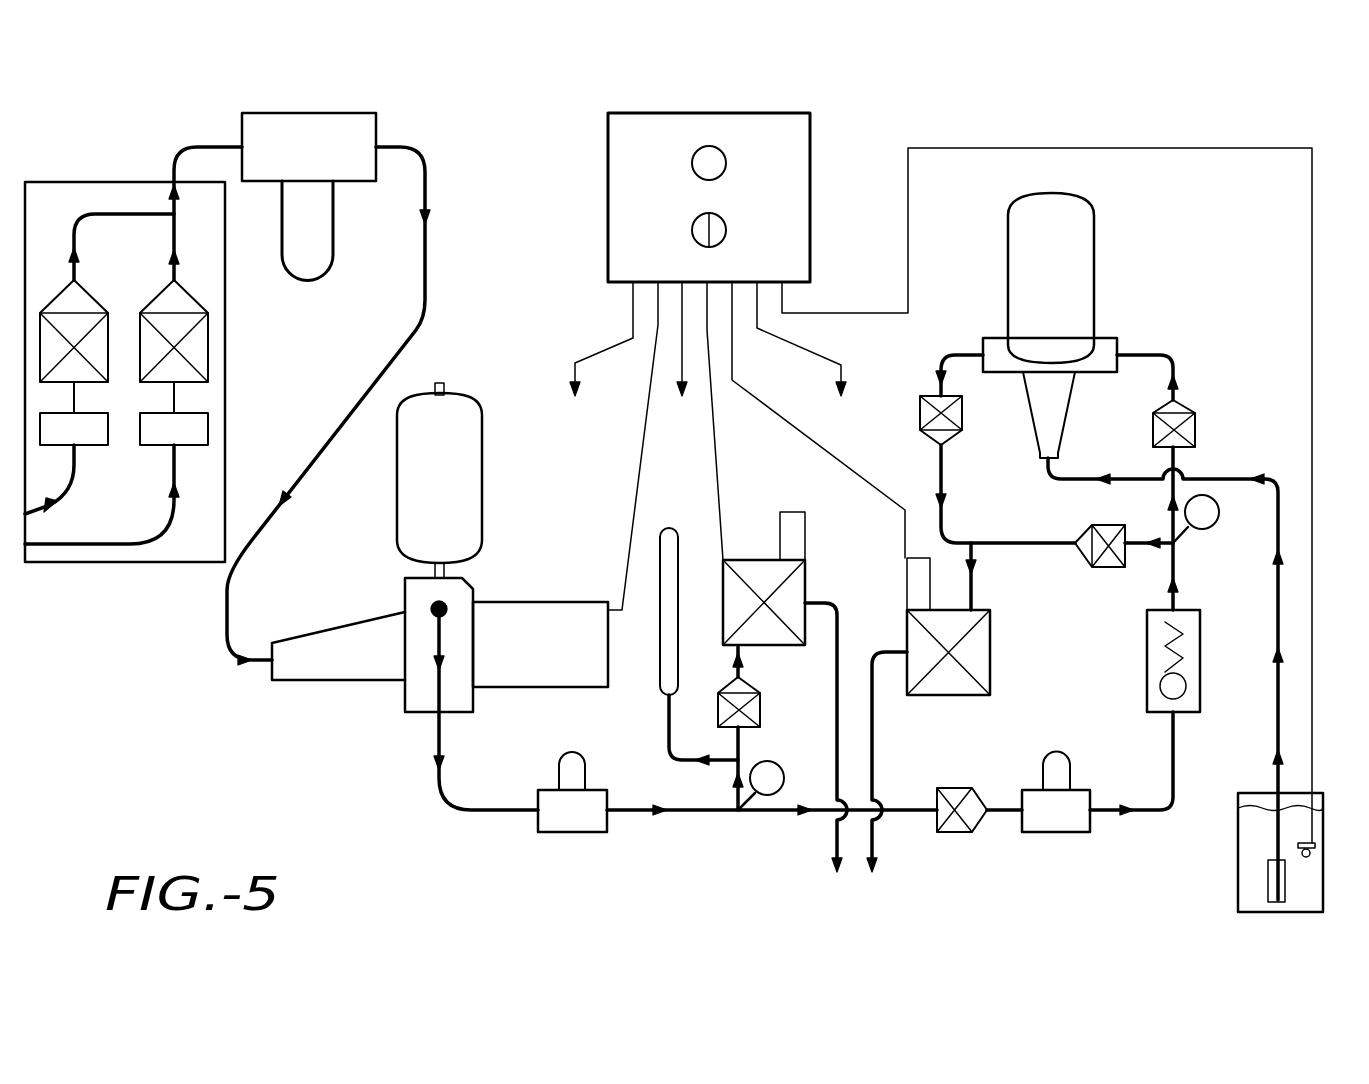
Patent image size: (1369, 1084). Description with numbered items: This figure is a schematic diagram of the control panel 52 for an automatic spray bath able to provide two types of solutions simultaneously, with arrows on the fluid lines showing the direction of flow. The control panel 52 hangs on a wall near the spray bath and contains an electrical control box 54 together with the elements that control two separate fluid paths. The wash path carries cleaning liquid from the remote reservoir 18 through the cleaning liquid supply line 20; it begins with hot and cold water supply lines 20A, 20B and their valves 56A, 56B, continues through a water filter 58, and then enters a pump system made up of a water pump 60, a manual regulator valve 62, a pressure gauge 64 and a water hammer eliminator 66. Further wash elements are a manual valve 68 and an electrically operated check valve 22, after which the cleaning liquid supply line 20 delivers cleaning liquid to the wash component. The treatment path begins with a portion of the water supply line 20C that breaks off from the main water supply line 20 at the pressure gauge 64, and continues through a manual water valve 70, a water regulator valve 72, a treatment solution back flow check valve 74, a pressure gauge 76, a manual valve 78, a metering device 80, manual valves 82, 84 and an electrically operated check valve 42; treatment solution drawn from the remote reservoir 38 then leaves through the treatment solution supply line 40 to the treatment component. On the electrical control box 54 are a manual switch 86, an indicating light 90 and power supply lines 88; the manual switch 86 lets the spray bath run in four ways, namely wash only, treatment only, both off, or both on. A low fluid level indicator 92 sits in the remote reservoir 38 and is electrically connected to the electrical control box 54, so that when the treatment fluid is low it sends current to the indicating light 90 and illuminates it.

The remote reservoir 18 is at (40, 182).
The cleaning liquid supply line 20 is at (180, 152).
The hot water supply line 20A is at (92, 447).
The cold water supply line 20B is at (192, 447).
The water supply line portion 20C is at (760, 813).
The electrically operated check valve 22 is at (805, 576).
The remote reservoir 38 is at (1318, 822).
The treatment solution supply line 40 is at (950, 350).
The electrically operated check valve 42 is at (990, 643).
The control panel 52 is at (915, 122).
The electrical control box 54 is at (800, 143).
The hot water supply valve 56A is at (94, 300).
The cold water supply valve 56B is at (190, 300).
The water filter 58 is at (302, 113).
The water pump 60 is at (338, 705).
The manual regulator valve 62 is at (565, 752).
The pressure gauge 64 is at (785, 778).
The water hammer eliminator 66 is at (672, 567).
The manual valve 68 is at (748, 692).
The manual water valve 70 is at (950, 835).
The water regulator valve 72 is at (1052, 835).
The treatment solution back flow check valve 74 is at (1205, 645).
The pressure gauge 76 is at (1222, 515).
The manual valve 78 is at (1181, 407).
The metering device 80 is at (1085, 230).
The manual valve 82 is at (920, 413).
The manual valve 84 is at (1106, 528).
The manual switch 86 is at (692, 230).
The power supply lines 88 is at (585, 330).
The indicating light 90 is at (692, 163).
The low fluid level indicator 92 is at (1308, 862).